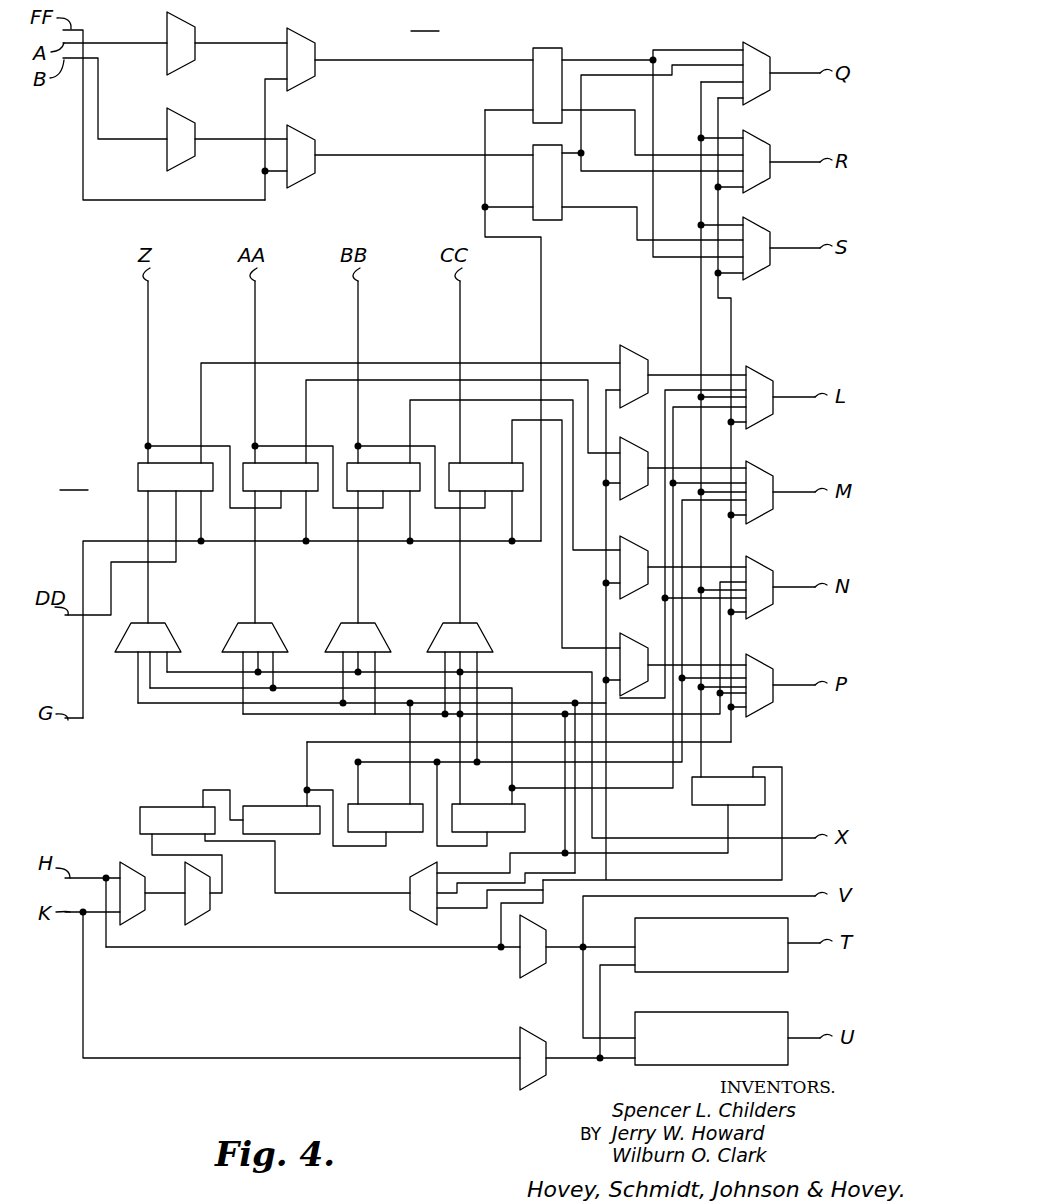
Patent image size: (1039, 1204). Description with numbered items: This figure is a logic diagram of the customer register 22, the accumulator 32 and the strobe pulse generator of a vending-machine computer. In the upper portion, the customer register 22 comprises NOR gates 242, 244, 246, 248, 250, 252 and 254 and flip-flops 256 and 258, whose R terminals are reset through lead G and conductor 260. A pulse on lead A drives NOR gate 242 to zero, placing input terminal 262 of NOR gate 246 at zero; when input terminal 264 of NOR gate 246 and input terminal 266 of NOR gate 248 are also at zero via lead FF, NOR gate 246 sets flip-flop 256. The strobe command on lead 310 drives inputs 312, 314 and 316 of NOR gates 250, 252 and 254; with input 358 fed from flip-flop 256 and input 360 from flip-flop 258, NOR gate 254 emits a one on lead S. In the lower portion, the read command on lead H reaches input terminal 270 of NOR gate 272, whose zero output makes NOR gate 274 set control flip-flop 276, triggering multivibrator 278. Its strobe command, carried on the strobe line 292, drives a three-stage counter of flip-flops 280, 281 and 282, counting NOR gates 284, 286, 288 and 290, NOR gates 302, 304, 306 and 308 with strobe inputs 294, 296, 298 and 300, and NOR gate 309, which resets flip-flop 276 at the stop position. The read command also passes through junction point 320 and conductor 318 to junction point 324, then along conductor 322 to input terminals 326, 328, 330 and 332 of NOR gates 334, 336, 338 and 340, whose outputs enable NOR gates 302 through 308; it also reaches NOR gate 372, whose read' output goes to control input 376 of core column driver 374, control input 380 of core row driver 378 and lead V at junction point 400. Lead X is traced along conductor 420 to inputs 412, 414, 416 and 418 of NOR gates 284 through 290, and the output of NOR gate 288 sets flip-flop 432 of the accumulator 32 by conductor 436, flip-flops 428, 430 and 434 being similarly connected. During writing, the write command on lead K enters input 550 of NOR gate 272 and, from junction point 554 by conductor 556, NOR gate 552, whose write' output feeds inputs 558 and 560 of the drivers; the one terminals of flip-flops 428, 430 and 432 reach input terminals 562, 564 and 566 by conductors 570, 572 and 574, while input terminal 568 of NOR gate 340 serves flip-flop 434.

The customer register 22 is at (425, 21).
The accumulator 32 is at (74, 480).
The NOR gate 242 is at (167, 24).
The NOR gate 244 is at (190, 114).
The NOR gate 246 is at (313, 35).
The NOR gate 248 is at (313, 133).
The NOR gate 250 is at (762, 52).
The NOR gate 252 is at (765, 148).
The NOR gate 254 is at (765, 235).
The flip-flop 256 is at (533, 80).
The flip-flop 258 is at (533, 176).
The conductor 260 is at (541, 303).
The input terminal 262 is at (278, 42).
The input terminal 264 is at (266, 79).
The input terminal 266 is at (287, 181).
The input terminal 270 is at (120, 868).
The NOR gate 272 is at (142, 874).
The NOR gate 274 is at (205, 922).
The control flip-flop 276 is at (165, 806).
The multivibrator 278 is at (288, 834).
The flip-flop 280 is at (390, 840).
The flip-flop 281 is at (525, 816).
The flip-flop 282 is at (738, 777).
The NOR gate 284 is at (168, 630).
The NOR gate 286 is at (275, 630).
The NOR gate 288 is at (377, 630).
The NOR gate 290 is at (479, 630).
The line 292 is at (307, 744).
The input 294 is at (752, 427).
The input 296 is at (752, 522).
The input 298 is at (752, 617).
The input 300 is at (754, 712).
The NOR gate 302 is at (762, 374).
The NOR gate 304 is at (762, 469).
The NOR gate 306 is at (762, 564).
The NOR gate 308 is at (762, 662).
The NOR gate 309 is at (410, 914).
The lead 310 is at (731, 333).
The input 312 is at (748, 104).
The input 314 is at (748, 192).
The input 316 is at (748, 280).
The conductor 318 is at (293, 950).
The junction point 320 is at (88, 912).
The conductor 322 is at (606, 829).
The junction point 324 is at (497, 950).
The input terminal 326 is at (622, 405).
The input terminal 328 is at (624, 496).
The input terminal 330 is at (622, 594).
The input terminal 332 is at (625, 688).
The NOR gate 334 is at (636, 358).
The NOR gate 336 is at (636, 450).
The NOR gate 338 is at (636, 548).
The NOR gate 340 is at (636, 645).
The input 358 is at (740, 266).
The input 360 is at (712, 240).
The NOR gate 372 is at (538, 924).
The core column driver 374 is at (768, 920).
The control input 376 is at (634, 946).
The core row driver 378 is at (710, 1012).
The control input 380 is at (640, 1035).
The junction point 400 is at (582, 952).
The input 412 is at (148, 666).
The input 414 is at (255, 657).
The input 416 is at (355, 657).
The input 418 is at (455, 657).
The conductor 420 is at (592, 690).
The flip-flop 428 is at (138, 468).
The flip-flop 430 is at (243, 463).
The flip-flop 432 is at (347, 463).
The flip-flop 434 is at (449, 463).
The conductor 436 is at (400, 543).
The input 550 is at (120, 923).
The NOR gate 552 is at (520, 1080).
The junction point 554 is at (78, 918).
The conductor 556 is at (241, 1057).
The input 558 is at (614, 972).
The input 560 is at (630, 1064).
The input terminal 562 is at (620, 357).
The input terminal 564 is at (615, 458).
The input terminal 566 is at (615, 558).
The input terminal 568 is at (620, 648).
The conductor 570 is at (378, 363).
The conductor 572 is at (390, 381).
The conductor 574 is at (515, 400).